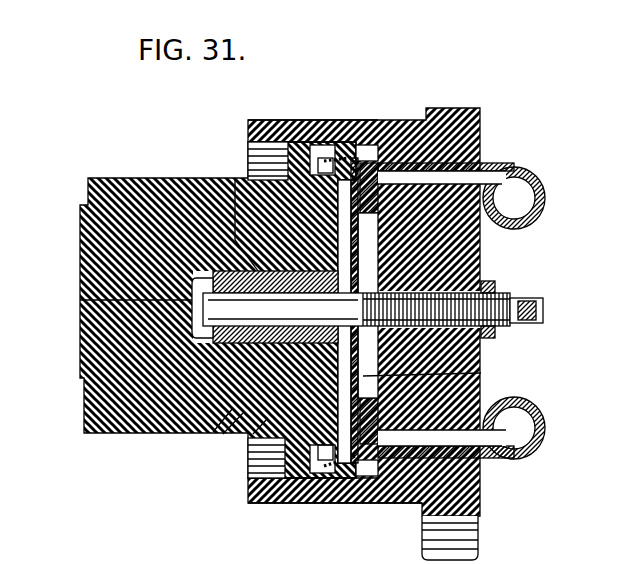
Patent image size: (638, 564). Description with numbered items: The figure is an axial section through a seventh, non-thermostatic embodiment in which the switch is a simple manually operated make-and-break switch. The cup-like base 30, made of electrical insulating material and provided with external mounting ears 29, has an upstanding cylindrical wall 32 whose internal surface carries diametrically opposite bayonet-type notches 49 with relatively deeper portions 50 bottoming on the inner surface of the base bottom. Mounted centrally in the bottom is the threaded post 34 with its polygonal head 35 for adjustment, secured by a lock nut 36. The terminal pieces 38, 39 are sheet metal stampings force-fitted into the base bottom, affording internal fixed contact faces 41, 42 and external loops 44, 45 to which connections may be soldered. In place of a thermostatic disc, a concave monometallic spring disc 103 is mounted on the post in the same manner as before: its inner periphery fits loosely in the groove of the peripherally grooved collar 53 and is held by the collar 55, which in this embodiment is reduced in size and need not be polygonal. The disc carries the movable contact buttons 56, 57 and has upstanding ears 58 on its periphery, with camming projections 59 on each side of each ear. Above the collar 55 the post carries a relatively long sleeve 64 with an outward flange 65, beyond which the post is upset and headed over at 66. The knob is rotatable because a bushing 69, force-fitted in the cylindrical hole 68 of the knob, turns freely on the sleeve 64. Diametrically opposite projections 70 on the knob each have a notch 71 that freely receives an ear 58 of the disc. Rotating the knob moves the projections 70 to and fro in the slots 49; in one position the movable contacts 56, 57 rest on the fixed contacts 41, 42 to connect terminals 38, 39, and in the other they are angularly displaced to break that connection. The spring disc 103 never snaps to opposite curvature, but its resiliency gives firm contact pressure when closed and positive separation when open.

The mounting ears 29 is at (471, 535).
The base 30 is at (474, 128).
The cylindrical wall 32 is at (305, 125).
The threaded post 34 is at (520, 288).
The polygonal head 35 is at (537, 303).
The lock nut 36 is at (489, 278).
The terminal piece 38 is at (500, 161).
The terminal piece 39 is at (480, 452).
The contact face 41 is at (460, 170).
The contact face 42 is at (446, 436).
The external loop 44 is at (539, 197).
The external loop 45 is at (540, 422).
The bayonet-type notches 49 is at (242, 480).
The deeper portions 50 is at (372, 140).
The peripherally grooved collar 53 is at (474, 262).
The collar 55 is at (245, 426).
The contact button 56 is at (474, 232).
The contact button 57 is at (475, 393).
The upstanding ears 58 is at (358, 152).
The projections 59 is at (352, 140).
The sleeve 64 is at (232, 172).
The flange 65 is at (185, 312).
The headed-over end 66 is at (72, 292).
The cylindrical hole 68 is at (215, 426).
The bushing 69 is at (205, 424).
The projections 70 is at (268, 134).
The notch 71 is at (322, 137).
The spring disc 103 is at (473, 365).